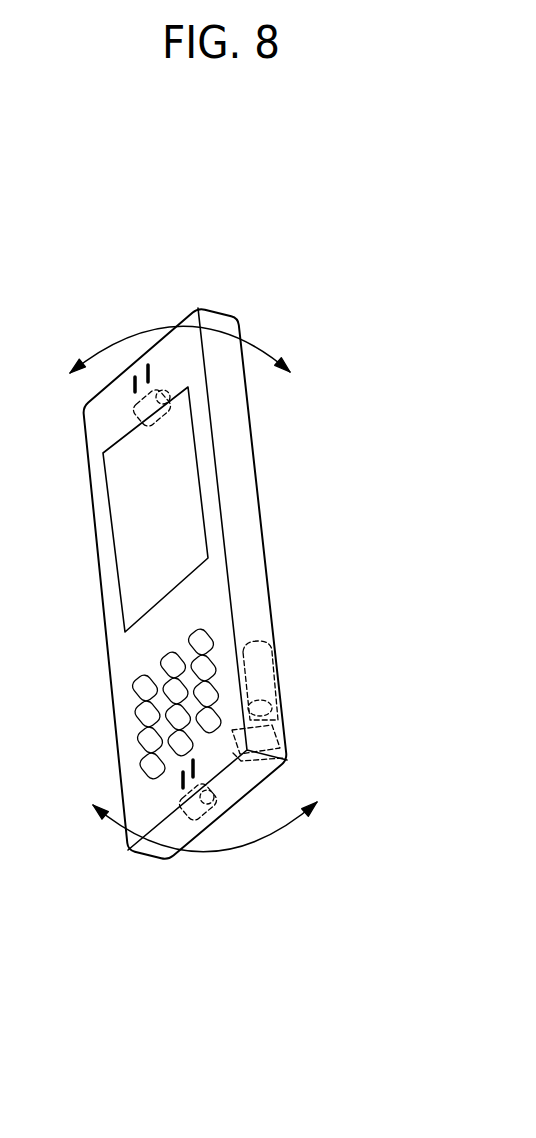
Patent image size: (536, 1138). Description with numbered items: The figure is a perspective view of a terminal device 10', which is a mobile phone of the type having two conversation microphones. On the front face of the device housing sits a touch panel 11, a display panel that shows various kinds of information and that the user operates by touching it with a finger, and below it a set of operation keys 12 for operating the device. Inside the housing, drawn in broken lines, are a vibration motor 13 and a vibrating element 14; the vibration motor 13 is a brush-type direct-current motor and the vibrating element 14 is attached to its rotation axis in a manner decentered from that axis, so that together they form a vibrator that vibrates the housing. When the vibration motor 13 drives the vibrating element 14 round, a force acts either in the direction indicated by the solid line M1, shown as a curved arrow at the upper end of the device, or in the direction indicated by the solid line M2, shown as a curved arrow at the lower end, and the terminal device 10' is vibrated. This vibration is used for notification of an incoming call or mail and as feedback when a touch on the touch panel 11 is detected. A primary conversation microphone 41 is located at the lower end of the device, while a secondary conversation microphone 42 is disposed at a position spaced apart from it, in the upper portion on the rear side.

The terminal device 10' is at (185, 508).
The touch panel 11 is at (185, 500).
The operation keys 12 is at (213, 632).
The vibration motor 13 is at (255, 672).
The vibrating element 14 is at (270, 742).
The primary conversation microphone 41 is at (213, 795).
The secondary conversation microphone 42 is at (190, 388).
The direction of force M1 is at (273, 357).
The direction of force M2 is at (273, 840).